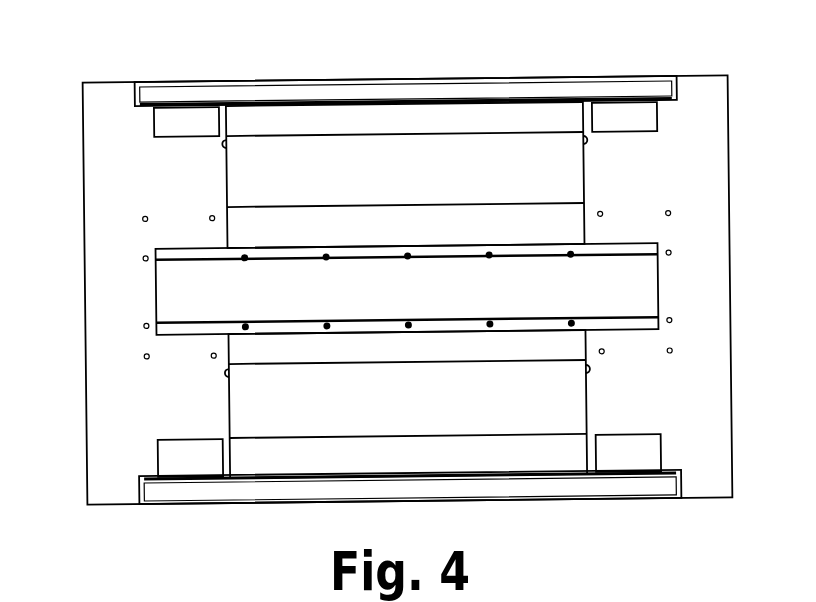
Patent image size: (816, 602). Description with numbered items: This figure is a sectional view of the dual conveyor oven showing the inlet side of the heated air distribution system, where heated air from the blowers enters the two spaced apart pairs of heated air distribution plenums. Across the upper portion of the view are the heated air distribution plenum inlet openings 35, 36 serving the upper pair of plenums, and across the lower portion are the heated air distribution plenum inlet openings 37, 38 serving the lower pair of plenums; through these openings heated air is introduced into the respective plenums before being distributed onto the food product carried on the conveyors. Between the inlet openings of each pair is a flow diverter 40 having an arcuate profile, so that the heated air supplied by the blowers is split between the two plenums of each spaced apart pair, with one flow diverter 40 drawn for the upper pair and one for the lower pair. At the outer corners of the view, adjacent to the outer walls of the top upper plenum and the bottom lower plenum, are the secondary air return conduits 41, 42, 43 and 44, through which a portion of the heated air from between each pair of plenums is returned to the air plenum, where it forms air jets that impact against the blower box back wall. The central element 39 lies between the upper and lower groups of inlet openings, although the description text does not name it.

The heated air distribution plenum inlet opening 35 is at (550, 115).
The heated air distribution plenum inlet opening 36 is at (570, 217).
The heated air distribution plenum inlet opening 37 is at (490, 345).
The heated air distribution plenum inlet opening 38 is at (482, 458).
The central plate 39 is at (637, 288).
The flow diverter 40 is at (262, 153).
The secondary air return conduit 41 is at (648, 117).
The secondary air return conduit 42 is at (650, 455).
The secondary air return conduit 43 is at (160, 124).
The secondary air return conduit 44 is at (165, 463).